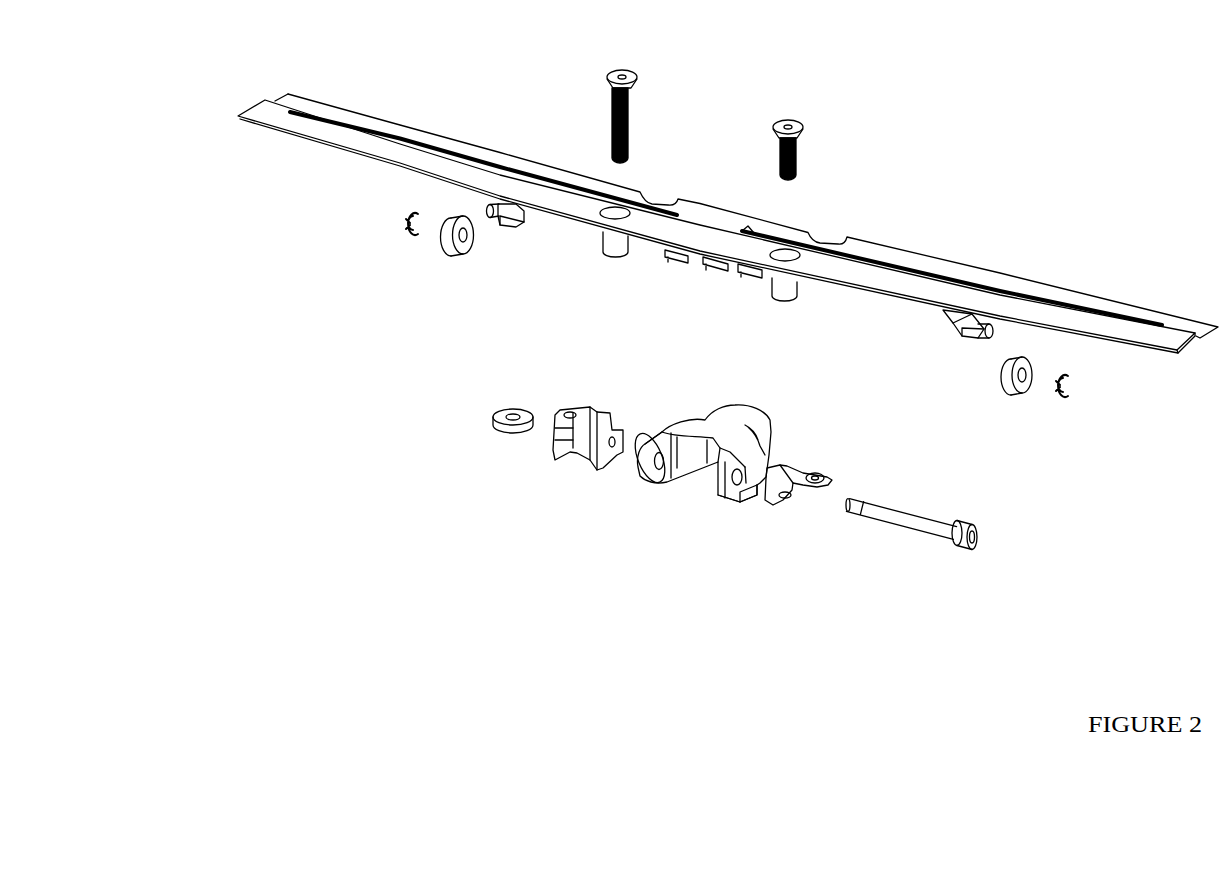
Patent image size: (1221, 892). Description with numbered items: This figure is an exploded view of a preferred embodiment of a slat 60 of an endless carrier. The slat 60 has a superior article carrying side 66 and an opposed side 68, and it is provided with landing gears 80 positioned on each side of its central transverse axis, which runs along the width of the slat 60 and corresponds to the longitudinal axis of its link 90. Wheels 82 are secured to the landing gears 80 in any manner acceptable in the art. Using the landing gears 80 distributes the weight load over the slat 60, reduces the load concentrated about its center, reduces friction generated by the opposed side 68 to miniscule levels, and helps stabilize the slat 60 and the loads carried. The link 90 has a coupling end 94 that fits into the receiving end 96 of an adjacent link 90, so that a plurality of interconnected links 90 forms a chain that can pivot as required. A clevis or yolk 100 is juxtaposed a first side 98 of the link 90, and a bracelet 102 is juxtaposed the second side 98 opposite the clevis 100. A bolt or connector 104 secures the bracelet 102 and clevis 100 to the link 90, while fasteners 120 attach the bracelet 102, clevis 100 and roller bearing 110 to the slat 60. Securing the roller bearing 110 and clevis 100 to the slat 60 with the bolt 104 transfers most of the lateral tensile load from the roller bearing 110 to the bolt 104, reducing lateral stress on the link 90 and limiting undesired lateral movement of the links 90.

The slat 60 is at (347, 447).
The superior article carrying side 66 is at (958, 265).
The opposed side 68 is at (295, 137).
The landing gear 80 is at (517, 228).
The wheel 82 is at (443, 253).
The link 90 is at (721, 435).
The coupling end 94 is at (767, 413).
The receiving end 96 is at (693, 480).
The first side 98 is at (632, 395).
The clevis 100 is at (580, 457).
The bracelet 102 is at (773, 506).
The bolt 104 is at (935, 531).
The roller bearing 110 is at (497, 432).
The fastener 120 is at (632, 71).